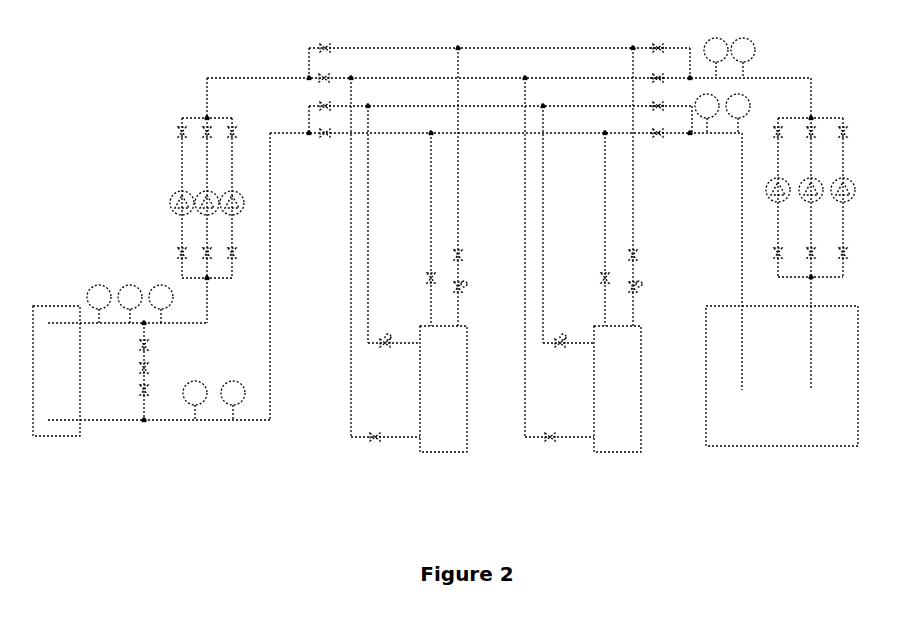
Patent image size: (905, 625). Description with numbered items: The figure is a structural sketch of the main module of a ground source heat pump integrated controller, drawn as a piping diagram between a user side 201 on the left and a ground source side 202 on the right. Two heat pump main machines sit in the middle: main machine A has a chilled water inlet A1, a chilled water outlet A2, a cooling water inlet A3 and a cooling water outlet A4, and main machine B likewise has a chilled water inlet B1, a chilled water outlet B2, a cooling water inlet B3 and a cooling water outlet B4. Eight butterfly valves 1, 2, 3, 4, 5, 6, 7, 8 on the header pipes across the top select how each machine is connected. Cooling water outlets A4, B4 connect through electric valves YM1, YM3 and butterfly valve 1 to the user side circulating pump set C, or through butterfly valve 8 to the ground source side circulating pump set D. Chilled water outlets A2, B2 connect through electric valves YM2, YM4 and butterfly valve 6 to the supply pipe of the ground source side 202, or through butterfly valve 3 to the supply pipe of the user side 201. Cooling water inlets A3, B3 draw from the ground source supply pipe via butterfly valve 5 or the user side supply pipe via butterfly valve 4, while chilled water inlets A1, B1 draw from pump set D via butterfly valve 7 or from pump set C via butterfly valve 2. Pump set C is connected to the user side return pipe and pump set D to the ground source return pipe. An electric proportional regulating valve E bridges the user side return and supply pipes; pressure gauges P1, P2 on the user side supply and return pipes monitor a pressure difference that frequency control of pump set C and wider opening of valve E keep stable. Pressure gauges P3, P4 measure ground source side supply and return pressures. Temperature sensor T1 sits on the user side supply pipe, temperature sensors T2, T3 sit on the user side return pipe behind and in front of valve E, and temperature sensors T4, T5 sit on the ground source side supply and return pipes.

The butterfly valve 1 is at (499, 52).
The butterfly valve 2 is at (509, 87).
The butterfly valve 3 is at (500, 108).
The butterfly valve 4 is at (506, 124).
The butterfly valve 5 is at (662, 122).
The butterfly valve 6 is at (662, 95).
The butterfly valve 7 is at (662, 67).
The butterfly valve 8 is at (662, 37).
The user side 201 is at (60, 300).
The ground source side 202 is at (793, 448).
The main machine A is at (443, 389).
The chilled water inlet A1 is at (397, 439).
The chilled water outlet A2 is at (405, 348).
The cooling water inlet A3 is at (419, 229).
The cooling water outlet A4 is at (469, 187).
The main machine B is at (617, 389).
The chilled water inlet B1 is at (571, 439).
The chilled water outlet B2 is at (580, 348).
The cooling water inlet B3 is at (593, 229).
The cooling water outlet B4 is at (644, 187).
The user side circulating pump set C is at (199, 219).
The ground source side circulating pump set D is at (819, 253).
The electric proportional regulating valve E is at (153, 371).
The electric valve YM1 is at (477, 288).
The electric valve YM2 is at (384, 354).
The electric valve YM3 is at (652, 288).
The electric valve YM4 is at (559, 354).
The temperature sensor T1 is at (233, 400).
The temperature sensor T2 is at (99, 304).
The temperature sensor T3 is at (161, 304).
The temperature sensor T4 is at (707, 113).
The temperature sensor T5 is at (716, 58).
The pressure gauge P1 is at (195, 400).
The pressure gauge P2 is at (130, 304).
The pressure gauge P3 is at (738, 113).
The pressure gauge P4 is at (743, 58).